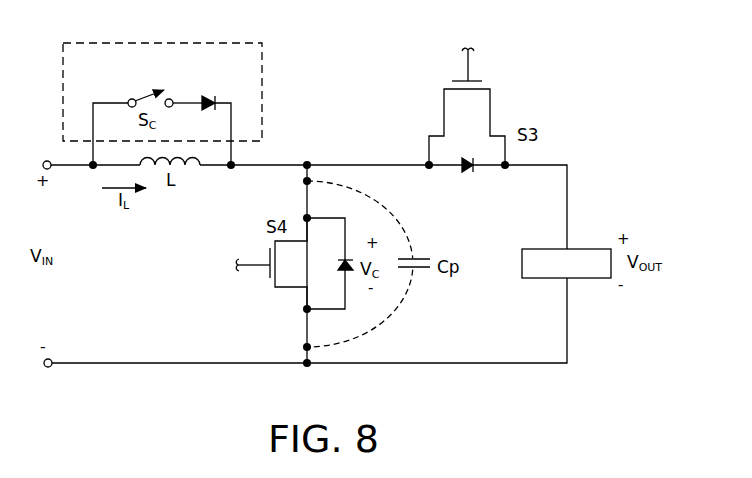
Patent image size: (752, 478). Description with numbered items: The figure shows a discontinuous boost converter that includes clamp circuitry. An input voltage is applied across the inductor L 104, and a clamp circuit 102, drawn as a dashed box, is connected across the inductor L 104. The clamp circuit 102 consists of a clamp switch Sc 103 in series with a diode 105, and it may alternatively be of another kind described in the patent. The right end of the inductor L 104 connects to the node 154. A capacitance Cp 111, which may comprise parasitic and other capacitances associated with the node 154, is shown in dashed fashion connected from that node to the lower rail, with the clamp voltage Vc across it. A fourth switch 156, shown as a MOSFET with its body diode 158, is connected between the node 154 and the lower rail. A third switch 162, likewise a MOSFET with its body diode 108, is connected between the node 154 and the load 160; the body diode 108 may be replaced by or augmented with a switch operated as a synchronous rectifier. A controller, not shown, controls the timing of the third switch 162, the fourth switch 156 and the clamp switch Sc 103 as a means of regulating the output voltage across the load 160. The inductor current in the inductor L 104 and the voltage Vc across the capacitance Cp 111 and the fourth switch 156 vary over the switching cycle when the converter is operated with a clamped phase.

The clamp circuit 102 is at (255, 52).
The clamp switch 103 is at (147, 93).
The diode 105 is at (212, 93).
The inductor 104 is at (193, 169).
The node 154 is at (310, 151).
The switch S4 156 is at (273, 301).
The body diode 158 is at (338, 266).
The capacitance Cp 111 is at (418, 271).
The switch S3 162 is at (518, 100).
The body diode 108 is at (467, 172).
The load 160 is at (594, 252).